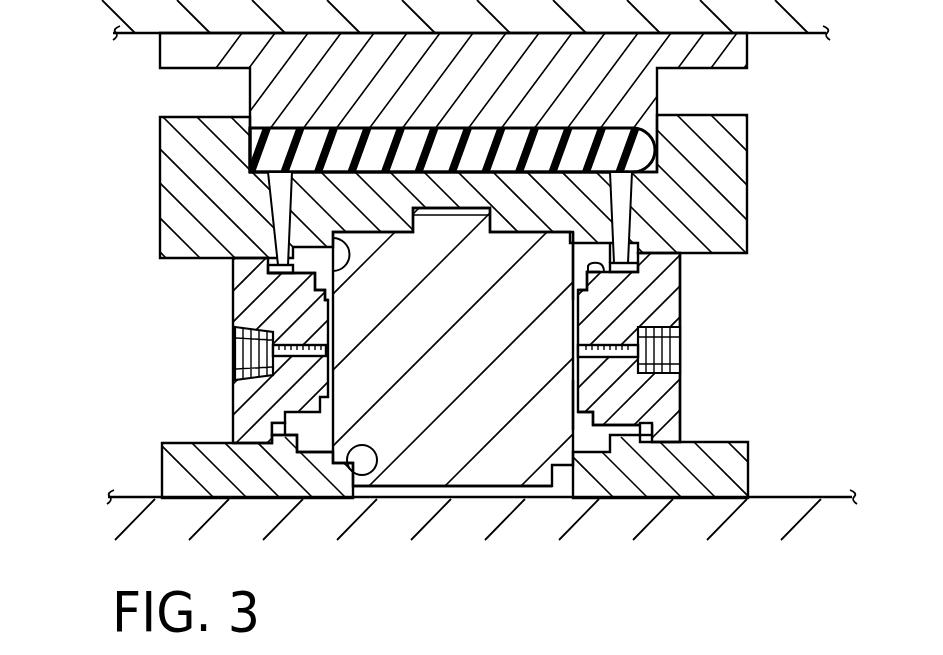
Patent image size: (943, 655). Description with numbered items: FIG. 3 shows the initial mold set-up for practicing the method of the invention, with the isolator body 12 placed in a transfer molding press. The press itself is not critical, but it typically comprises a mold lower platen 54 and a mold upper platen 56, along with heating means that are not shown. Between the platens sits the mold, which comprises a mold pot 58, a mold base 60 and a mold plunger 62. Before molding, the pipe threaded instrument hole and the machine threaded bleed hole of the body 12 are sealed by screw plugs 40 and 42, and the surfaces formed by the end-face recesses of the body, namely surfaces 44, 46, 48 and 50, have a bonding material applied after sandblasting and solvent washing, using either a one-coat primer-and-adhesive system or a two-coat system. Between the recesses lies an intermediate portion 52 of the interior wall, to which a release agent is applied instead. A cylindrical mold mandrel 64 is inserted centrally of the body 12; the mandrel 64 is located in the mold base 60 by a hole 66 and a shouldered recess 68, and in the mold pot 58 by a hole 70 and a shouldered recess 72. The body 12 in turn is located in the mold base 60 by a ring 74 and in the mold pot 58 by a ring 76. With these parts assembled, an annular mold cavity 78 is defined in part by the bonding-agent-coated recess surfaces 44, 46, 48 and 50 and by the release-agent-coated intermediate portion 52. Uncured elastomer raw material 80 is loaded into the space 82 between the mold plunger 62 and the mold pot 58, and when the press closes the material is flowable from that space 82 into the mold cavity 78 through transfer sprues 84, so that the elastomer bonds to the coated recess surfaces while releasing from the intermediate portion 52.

The body 12 is at (681, 317).
The screw plug 40 is at (681, 353).
The screw plug 42 is at (233, 348).
The recess surface 44 is at (600, 264).
The recess surface 46 is at (600, 296).
The recess surface 48 is at (568, 275).
The recess surface 50 is at (587, 290).
The intermediate portion 52 is at (573, 397).
The mold lower platen 54 is at (773, 495).
The mold upper platen 56 is at (773, 36).
The mold pot 58 is at (162, 168).
The mold base 60 is at (162, 462).
The mold plunger 62 is at (160, 63).
The cylindrical mold mandrel 64 is at (452, 313).
The hole 66 is at (372, 487).
The shouldered recess 68 is at (350, 480).
The hole 70 is at (430, 228).
The shouldered recess 72 is at (347, 260).
The ring 74 is at (280, 422).
The ring 76 is at (268, 268).
The annular mold cavity 78 is at (597, 422).
The uncured elastomer raw material 80 is at (653, 140).
The space 82 is at (249, 145).
The transfer sprues 84 is at (277, 203).